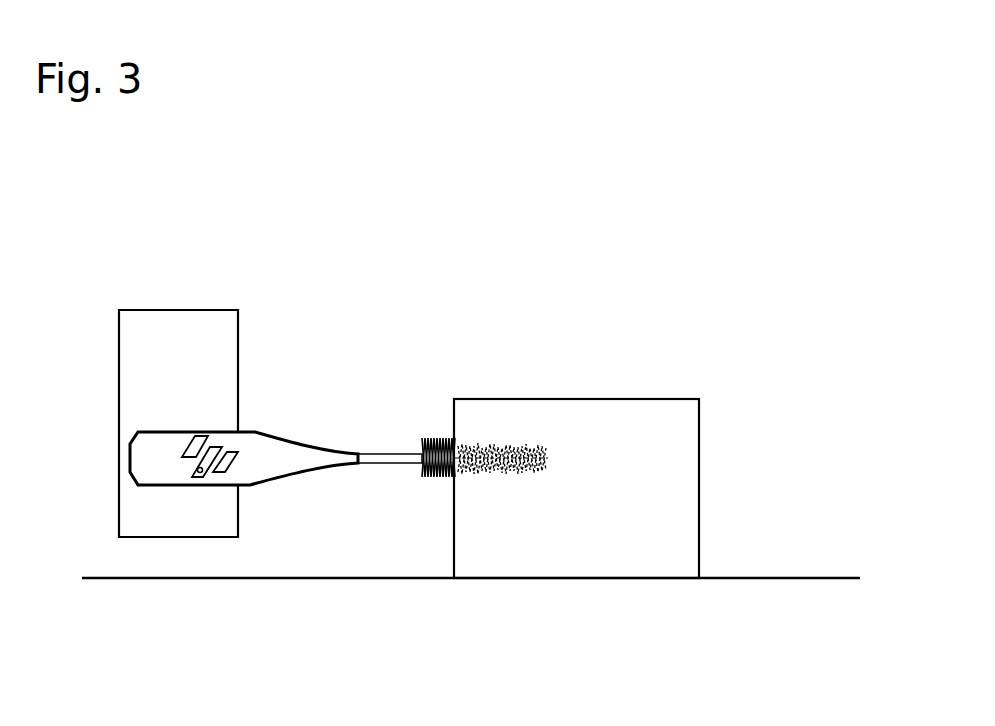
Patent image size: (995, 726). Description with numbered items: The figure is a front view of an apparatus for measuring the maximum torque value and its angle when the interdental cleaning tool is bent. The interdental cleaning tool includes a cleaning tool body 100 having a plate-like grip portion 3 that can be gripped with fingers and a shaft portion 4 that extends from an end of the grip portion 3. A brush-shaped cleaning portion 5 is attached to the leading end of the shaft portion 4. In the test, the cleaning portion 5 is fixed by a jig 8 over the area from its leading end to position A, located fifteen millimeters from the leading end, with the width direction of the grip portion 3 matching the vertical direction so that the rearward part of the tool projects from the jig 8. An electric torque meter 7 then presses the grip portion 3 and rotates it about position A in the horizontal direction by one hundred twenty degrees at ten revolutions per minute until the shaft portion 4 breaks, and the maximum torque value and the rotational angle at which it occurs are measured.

The cleaning tool body 100 is at (352, 356).
The grip portion 3 is at (249, 430).
The shaft portion 4 is at (375, 453).
The cleaning portion 5 is at (442, 437).
The electric torque meter 7 is at (160, 322).
The jig 8 is at (628, 417).